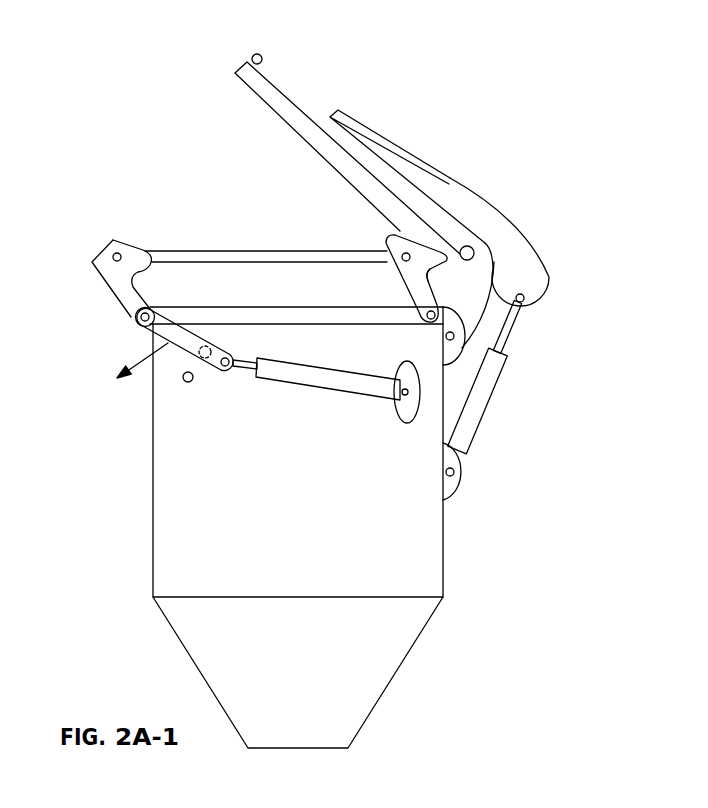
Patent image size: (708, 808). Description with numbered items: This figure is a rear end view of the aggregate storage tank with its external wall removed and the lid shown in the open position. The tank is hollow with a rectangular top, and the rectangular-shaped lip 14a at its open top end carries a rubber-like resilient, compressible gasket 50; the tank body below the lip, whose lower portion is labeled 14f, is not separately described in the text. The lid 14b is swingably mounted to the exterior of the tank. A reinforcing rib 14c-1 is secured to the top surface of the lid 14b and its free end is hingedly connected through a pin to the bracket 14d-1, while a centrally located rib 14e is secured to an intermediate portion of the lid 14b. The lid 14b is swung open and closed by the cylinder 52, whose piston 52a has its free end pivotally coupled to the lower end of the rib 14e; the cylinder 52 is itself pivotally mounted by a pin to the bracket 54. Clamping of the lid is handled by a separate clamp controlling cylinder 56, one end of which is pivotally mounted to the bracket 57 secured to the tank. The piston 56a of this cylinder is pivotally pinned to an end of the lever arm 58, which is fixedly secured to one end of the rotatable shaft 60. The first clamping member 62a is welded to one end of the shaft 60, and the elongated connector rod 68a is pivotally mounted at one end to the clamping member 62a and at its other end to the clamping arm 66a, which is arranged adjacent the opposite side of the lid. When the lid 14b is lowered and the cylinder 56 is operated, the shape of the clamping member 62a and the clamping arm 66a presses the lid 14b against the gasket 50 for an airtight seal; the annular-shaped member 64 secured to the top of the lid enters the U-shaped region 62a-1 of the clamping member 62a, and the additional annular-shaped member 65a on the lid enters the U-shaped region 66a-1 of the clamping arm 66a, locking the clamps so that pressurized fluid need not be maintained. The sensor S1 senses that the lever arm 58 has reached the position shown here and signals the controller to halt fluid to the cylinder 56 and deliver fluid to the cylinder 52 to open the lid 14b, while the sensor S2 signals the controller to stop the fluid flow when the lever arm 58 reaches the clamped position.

The gasket 50 is at (268, 307).
The hopper bottom 14f is at (403, 660).
The lip 14a is at (362, 307).
The connector rod 68a is at (268, 251).
The first clamping member 62a is at (108, 245).
The U-shaped region 62a-1 is at (122, 297).
The rotatable shaft 60 is at (142, 322).
The lever arm 58 is at (183, 347).
The sensor S2 is at (190, 382).
The sensor S1 is at (218, 341).
The piston 56a is at (240, 368).
The clamp controlling cylinder 56 is at (360, 392).
The bracket 57 is at (402, 410).
The lid 14b is at (303, 110).
The annular-shaped member 64 is at (254, 53).
The reinforcing rib 14c-1 is at (380, 167).
The centrally located rib 14e is at (488, 212).
The clamping arm 66a is at (388, 238).
The U-shaped region 66a-1 is at (440, 272).
The additional annular-shaped member 65a is at (474, 252).
The bracket 14d-1 is at (447, 362).
The bracket 54 is at (458, 473).
The cylinder 52 is at (477, 412).
The piston 52a is at (513, 342).